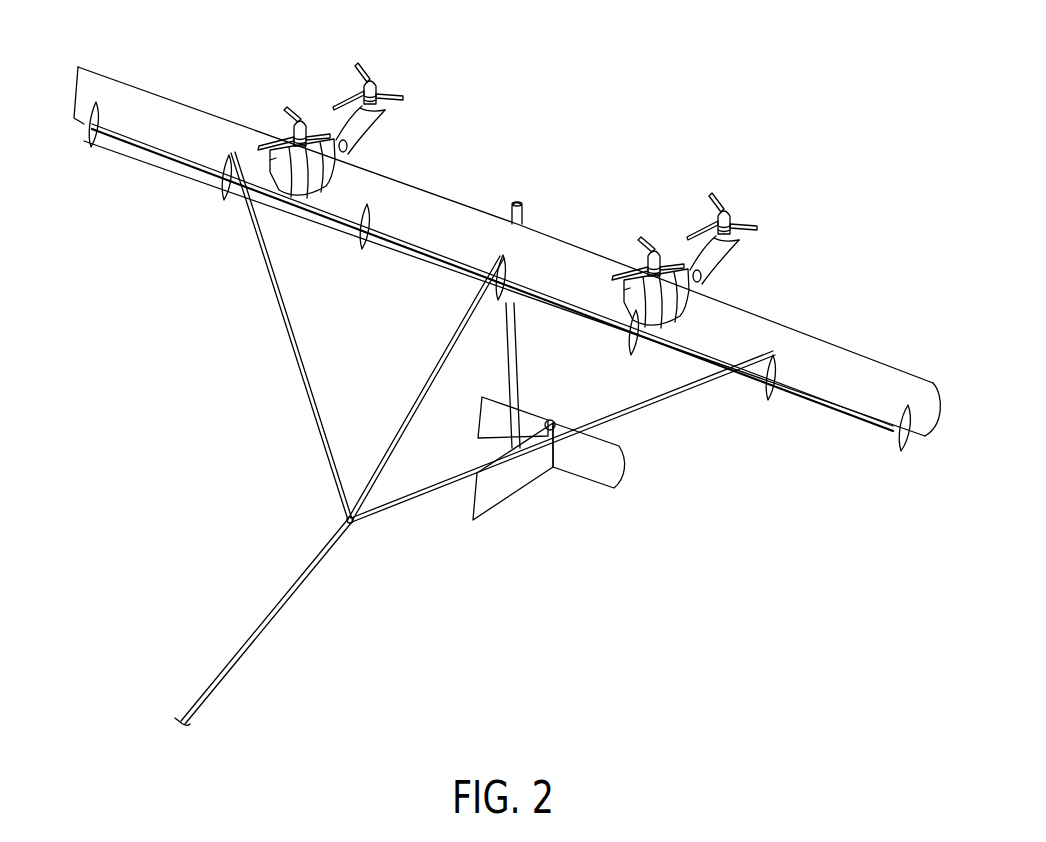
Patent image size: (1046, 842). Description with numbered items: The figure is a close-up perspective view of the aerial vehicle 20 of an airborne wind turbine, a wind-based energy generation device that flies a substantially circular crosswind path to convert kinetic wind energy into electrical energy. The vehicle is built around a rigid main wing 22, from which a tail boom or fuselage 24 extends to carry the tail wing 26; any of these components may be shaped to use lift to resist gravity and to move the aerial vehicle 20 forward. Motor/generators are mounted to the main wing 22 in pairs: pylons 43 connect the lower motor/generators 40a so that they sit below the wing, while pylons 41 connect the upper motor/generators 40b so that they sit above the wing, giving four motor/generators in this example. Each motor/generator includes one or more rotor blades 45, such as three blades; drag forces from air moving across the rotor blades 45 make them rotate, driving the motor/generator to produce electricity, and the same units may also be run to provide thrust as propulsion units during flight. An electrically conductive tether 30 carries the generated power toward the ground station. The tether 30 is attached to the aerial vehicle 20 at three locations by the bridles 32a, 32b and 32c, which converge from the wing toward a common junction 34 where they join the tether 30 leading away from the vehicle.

The aerial vehicle 20 is at (550, 104).
The main wing 22 is at (832, 353).
The tail boom 24 is at (518, 361).
The tail wing 26 is at (518, 486).
The tether 30 is at (279, 612).
The bridle 32a is at (286, 324).
The bridle 32b is at (437, 367).
The bridle 32c is at (428, 494).
The bridle junction 34 is at (354, 528).
The lower motor/generator 40a is at (300, 117).
The upper motor/generator 40b is at (368, 77).
The pylon 41 is at (376, 124).
The pylon 43 is at (281, 172).
The rotor blade 45 is at (404, 97).